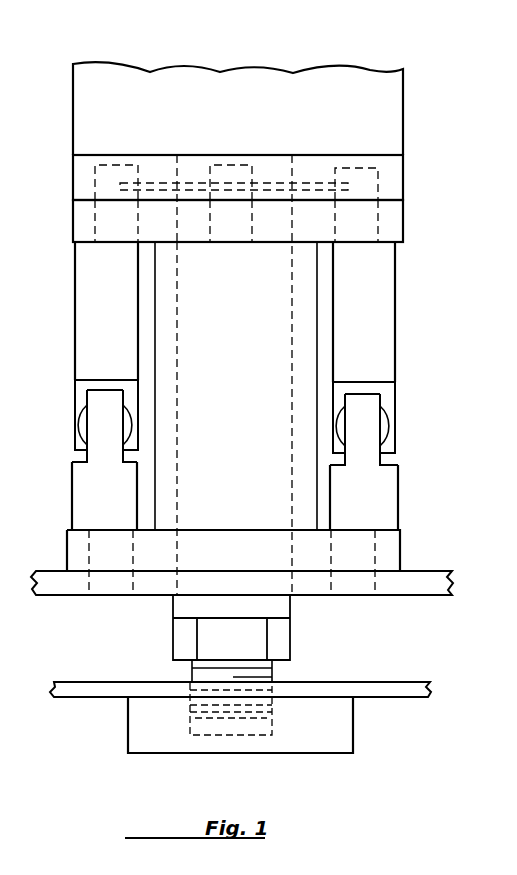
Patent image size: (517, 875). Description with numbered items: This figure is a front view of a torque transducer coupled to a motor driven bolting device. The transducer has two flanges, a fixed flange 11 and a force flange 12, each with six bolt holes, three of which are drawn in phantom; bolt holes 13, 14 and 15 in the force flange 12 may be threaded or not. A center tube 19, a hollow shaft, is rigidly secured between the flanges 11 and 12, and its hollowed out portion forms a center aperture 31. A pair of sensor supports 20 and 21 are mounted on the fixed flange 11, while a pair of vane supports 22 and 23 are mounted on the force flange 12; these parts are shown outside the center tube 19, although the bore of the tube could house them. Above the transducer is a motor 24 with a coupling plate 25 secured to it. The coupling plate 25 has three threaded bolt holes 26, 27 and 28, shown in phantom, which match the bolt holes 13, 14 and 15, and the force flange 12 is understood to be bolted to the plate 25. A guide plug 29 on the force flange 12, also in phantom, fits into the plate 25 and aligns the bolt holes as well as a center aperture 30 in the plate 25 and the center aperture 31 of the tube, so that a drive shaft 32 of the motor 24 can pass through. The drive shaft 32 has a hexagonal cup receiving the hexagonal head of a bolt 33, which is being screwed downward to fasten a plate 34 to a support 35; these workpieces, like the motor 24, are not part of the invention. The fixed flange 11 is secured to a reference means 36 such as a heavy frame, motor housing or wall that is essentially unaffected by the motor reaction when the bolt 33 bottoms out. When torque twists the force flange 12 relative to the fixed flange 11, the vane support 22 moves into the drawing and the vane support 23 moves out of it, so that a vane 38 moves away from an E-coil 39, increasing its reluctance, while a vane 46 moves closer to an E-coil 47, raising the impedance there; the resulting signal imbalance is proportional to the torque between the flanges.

The fixed flange 11 is at (398, 552).
The force flange 12 is at (403, 220).
The bolt hole 13 is at (110, 245).
The bolt hole 14 is at (228, 242).
The bolt hole 15 is at (356, 247).
The center tube 19 is at (307, 345).
The sensor support 20 is at (380, 492).
The sensor support 21 is at (83, 497).
The vane support 22 is at (383, 355).
The vane support 23 is at (93, 310).
The motor 24 is at (393, 87).
The coupling plate 25 is at (393, 183).
The threaded bolt hole 26 is at (115, 173).
The threaded bolt hole 27 is at (225, 173).
The threaded bolt hole 28 is at (357, 173).
The guide plug 29 is at (270, 177).
The center aperture 30 is at (195, 167).
The center aperture 31 is at (251, 384).
The drive shaft 32 is at (280, 607).
The bolt 33 is at (272, 670).
The plate 34 is at (417, 688).
The support 35 is at (342, 723).
The reference means 36 is at (425, 592).
The vane 38 is at (385, 395).
The E-coil 39 is at (383, 428).
The vane 46 is at (82, 388).
The E-coil 47 is at (82, 423).